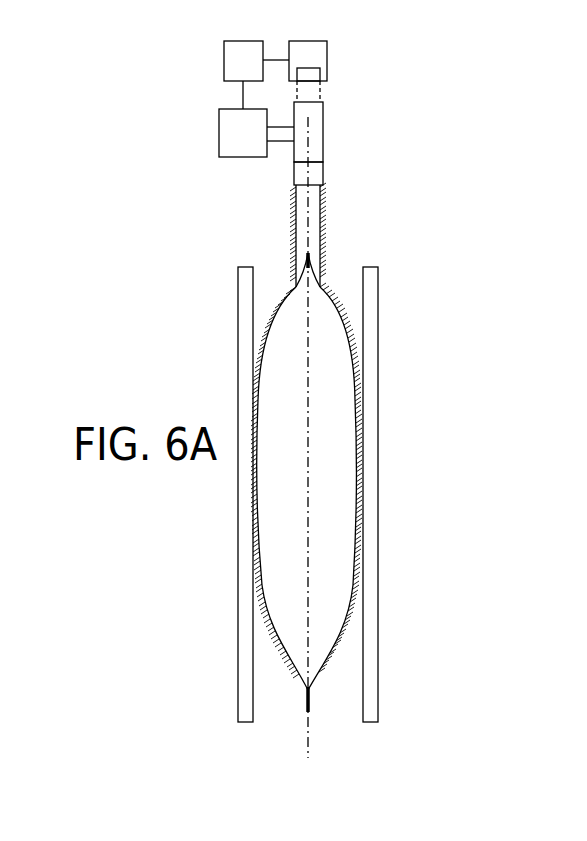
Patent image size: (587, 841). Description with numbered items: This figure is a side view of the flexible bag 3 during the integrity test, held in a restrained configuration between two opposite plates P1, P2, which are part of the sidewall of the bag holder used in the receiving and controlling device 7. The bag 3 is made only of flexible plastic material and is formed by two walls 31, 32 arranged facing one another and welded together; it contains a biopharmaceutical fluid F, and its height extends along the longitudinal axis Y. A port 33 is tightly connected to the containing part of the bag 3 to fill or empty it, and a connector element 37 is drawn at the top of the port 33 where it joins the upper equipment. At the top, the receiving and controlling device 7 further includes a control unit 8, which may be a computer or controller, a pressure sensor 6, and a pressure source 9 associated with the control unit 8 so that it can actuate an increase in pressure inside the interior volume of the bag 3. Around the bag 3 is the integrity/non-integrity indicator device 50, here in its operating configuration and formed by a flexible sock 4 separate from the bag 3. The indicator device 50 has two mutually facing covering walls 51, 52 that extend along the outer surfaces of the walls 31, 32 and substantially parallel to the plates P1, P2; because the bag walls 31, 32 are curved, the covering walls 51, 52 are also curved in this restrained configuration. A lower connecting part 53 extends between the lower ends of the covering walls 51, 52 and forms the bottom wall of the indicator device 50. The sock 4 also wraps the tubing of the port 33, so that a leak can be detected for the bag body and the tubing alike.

The bag 3 is at (309, 491).
The flexible sock 4 is at (276, 279).
The pressure sensor 6 is at (219, 125).
The receiving and controlling device 7 is at (277, 494).
The control unit 8 is at (224, 55).
The pressure source 9 is at (327, 50).
The wall 31 is at (267, 322).
The wall 32 is at (350, 320).
The port 33 is at (292, 213).
The connector 37 is at (325, 172).
The indicator device 50 is at (356, 280).
The covering wall 51 is at (268, 618).
The covering wall 52 is at (350, 620).
The lower connecting part 53 is at (313, 708).
The longitudinal axis Y is at (315, 135).
The plate P1 is at (247, 557).
The plate P2 is at (372, 555).
The biopharmaceutical fluid F is at (339, 513).